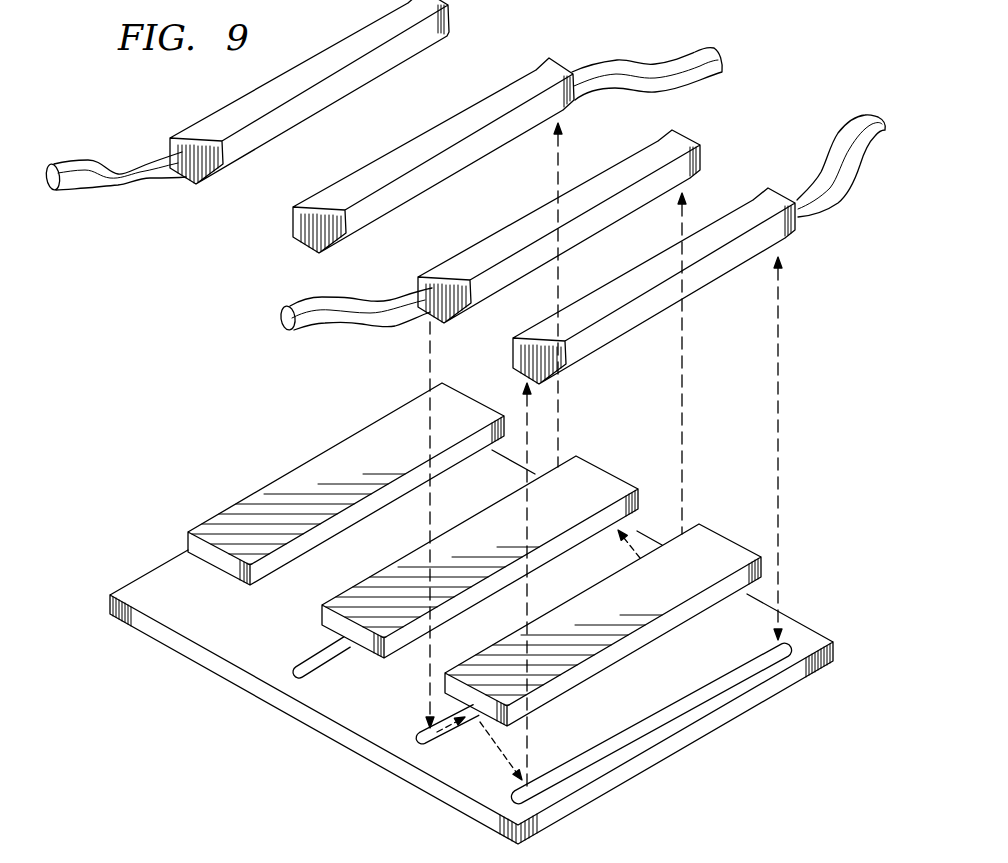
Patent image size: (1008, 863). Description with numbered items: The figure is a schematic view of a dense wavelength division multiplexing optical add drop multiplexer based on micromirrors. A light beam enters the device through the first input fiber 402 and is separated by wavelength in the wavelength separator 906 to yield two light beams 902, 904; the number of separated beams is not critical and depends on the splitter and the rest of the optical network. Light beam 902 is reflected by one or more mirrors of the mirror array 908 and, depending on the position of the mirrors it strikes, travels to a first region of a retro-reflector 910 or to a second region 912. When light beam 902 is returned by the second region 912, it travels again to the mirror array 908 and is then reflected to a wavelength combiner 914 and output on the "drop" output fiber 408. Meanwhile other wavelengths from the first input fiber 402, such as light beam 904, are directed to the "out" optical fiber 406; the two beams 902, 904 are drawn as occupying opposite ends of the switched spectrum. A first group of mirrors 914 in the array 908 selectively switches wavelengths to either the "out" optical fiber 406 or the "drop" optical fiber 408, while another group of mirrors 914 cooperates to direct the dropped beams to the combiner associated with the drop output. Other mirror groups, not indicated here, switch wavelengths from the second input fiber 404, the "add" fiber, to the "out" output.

The first input fiber 402 is at (298, 307).
The second input fiber 404 is at (90, 163).
The out optical fiber 406 is at (608, 63).
The drop output fiber 408 is at (848, 127).
The light beam 902 is at (430, 362).
The light beam 904 is at (558, 418).
The wavelength separator 906 is at (702, 170).
The mirror array 908 is at (318, 730).
The first region of retro-reflector 910 is at (320, 618).
The second region of retro-reflector 912 is at (633, 650).
The wavelength combiner / group of mirrors 914 is at (613, 333).